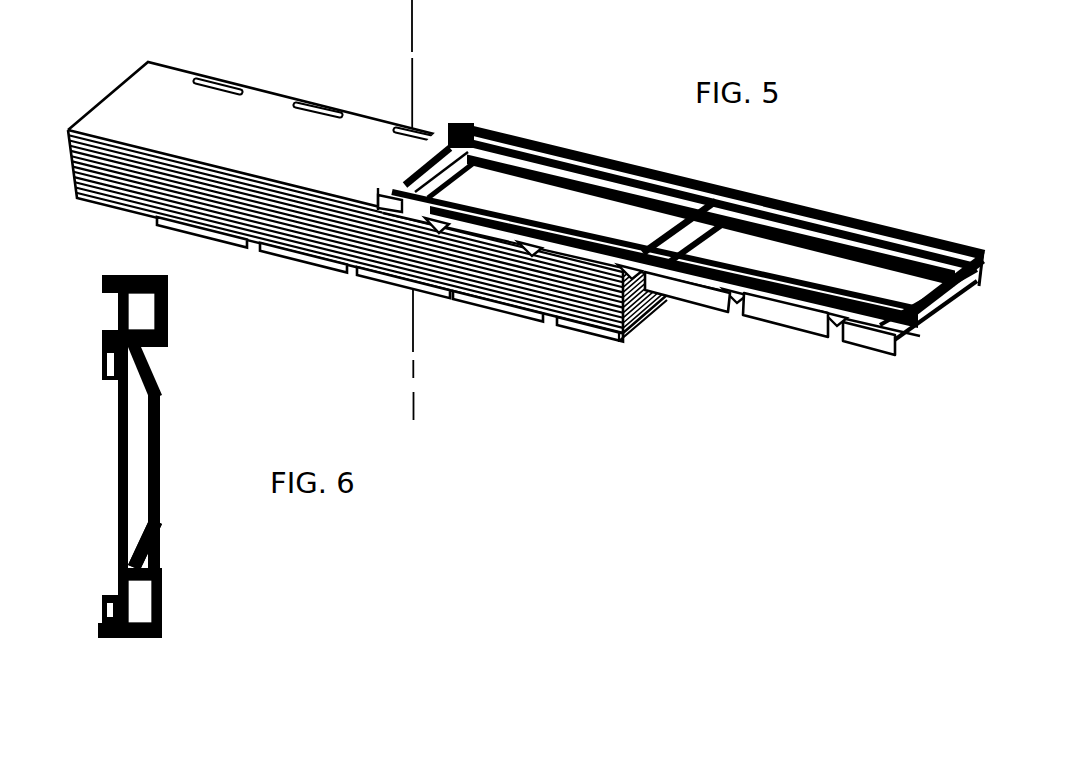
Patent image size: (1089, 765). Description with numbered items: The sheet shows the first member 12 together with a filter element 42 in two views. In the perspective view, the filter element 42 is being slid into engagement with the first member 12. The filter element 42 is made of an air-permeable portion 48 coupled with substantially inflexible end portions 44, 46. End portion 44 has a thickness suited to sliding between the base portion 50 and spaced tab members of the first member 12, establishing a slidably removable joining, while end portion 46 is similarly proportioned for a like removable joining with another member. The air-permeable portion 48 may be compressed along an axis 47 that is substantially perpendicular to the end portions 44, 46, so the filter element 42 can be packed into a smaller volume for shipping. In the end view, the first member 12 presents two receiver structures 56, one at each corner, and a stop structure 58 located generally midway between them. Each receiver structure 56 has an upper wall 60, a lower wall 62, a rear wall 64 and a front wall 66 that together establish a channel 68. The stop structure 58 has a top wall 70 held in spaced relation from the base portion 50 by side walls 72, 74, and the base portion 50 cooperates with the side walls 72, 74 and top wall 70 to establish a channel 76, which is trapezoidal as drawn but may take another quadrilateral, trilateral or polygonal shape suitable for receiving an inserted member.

In FIG. 5, the first member 12 is at (862, 223).
In FIG. 6, the first member 12 is at (272, 442).
In FIG. 5, the filter element 42 is at (618, 353).
In FIG. 5, the end portion 44 is at (175, 73).
In FIG. 5, the end portion 46 is at (307, 263).
In FIG. 5, the axis 47 is at (414, 336).
In FIG. 5, the air-permeable portion 48 is at (72, 167).
In FIG. 6, the base portion 50 is at (120, 463).
In FIG. 6, the receiver structure 56 is at (182, 322).
In FIG. 6, the stop structure 58 is at (171, 462).
In FIG. 6, the upper wall 60 is at (170, 327).
In FIG. 6, the lower wall 62 is at (140, 315).
In FIG. 6, the rear wall 64 is at (158, 364).
In FIG. 6, the front wall 66 is at (155, 275).
In FIG. 6, the channel 68 is at (128, 327).
In FIG. 6, the top wall 70 is at (163, 426).
In FIG. 6, the side wall 72 is at (157, 388).
In FIG. 6, the side wall 74 is at (160, 527).
In FIG. 6, the channel 76 is at (118, 420).